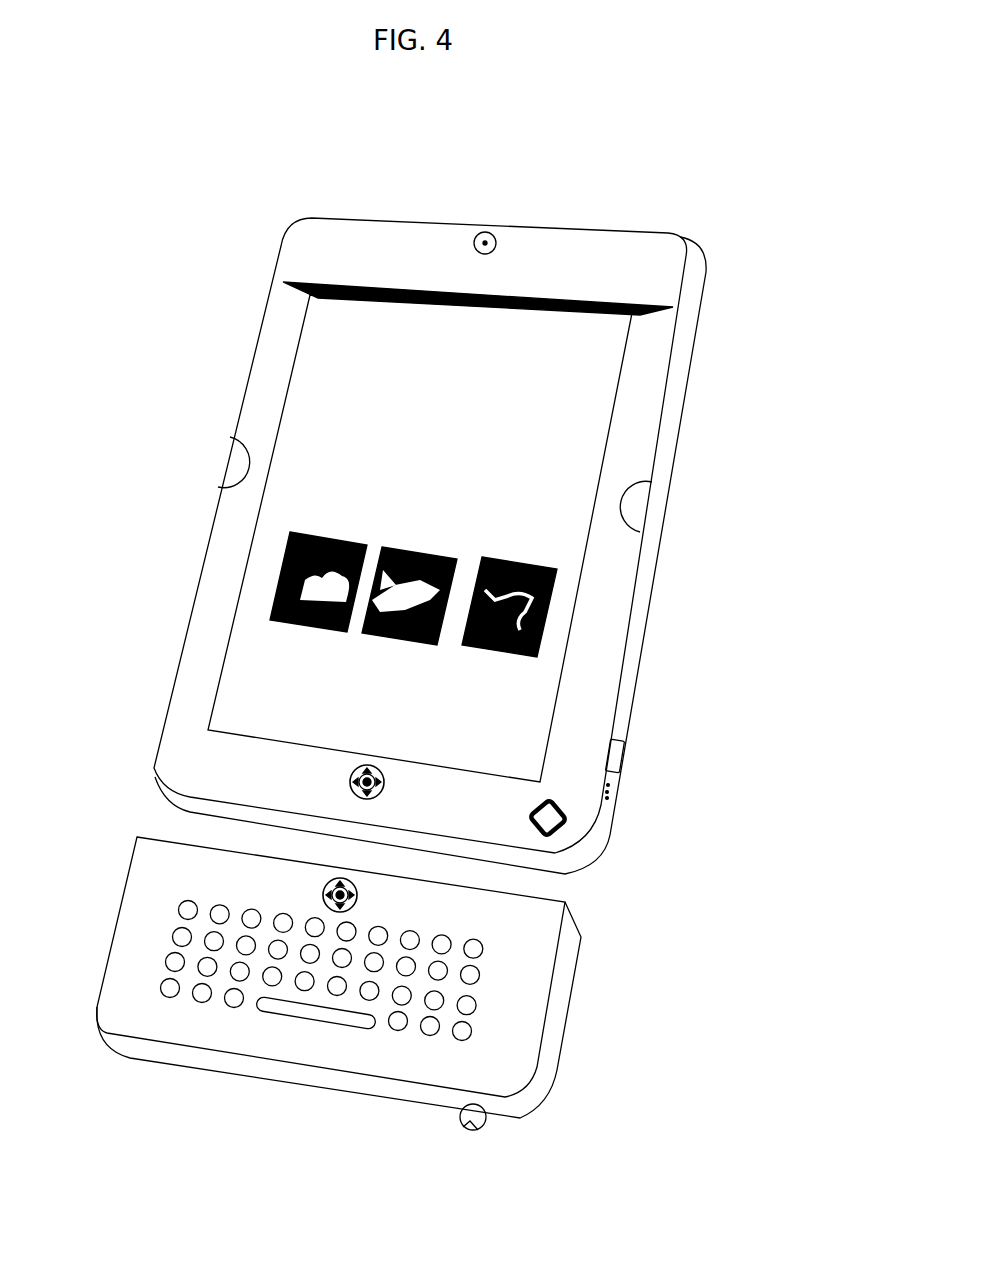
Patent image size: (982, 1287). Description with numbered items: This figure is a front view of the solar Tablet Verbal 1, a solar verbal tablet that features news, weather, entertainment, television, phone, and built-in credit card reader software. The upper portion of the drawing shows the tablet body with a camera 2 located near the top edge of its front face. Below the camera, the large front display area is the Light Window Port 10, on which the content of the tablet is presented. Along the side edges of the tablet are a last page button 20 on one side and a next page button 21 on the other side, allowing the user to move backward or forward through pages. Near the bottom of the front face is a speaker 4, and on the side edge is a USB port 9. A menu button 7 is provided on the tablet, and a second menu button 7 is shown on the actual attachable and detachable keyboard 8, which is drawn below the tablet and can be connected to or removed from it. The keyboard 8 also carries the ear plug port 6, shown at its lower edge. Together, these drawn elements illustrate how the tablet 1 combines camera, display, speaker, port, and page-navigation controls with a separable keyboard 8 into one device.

The solar verbal tablet 1 is at (220, 402).
The camera 2 is at (500, 233).
The speaker 4 is at (570, 817).
The ear plug port 6 is at (478, 1136).
The menu button 7 is at (347, 782).
The attachable and detachable keyboard 8 is at (590, 966).
The USB port 9 is at (623, 758).
The Light Window Port (LWP) 10 is at (268, 540).
The last page button 20 is at (232, 463).
The next page button 21 is at (633, 508).